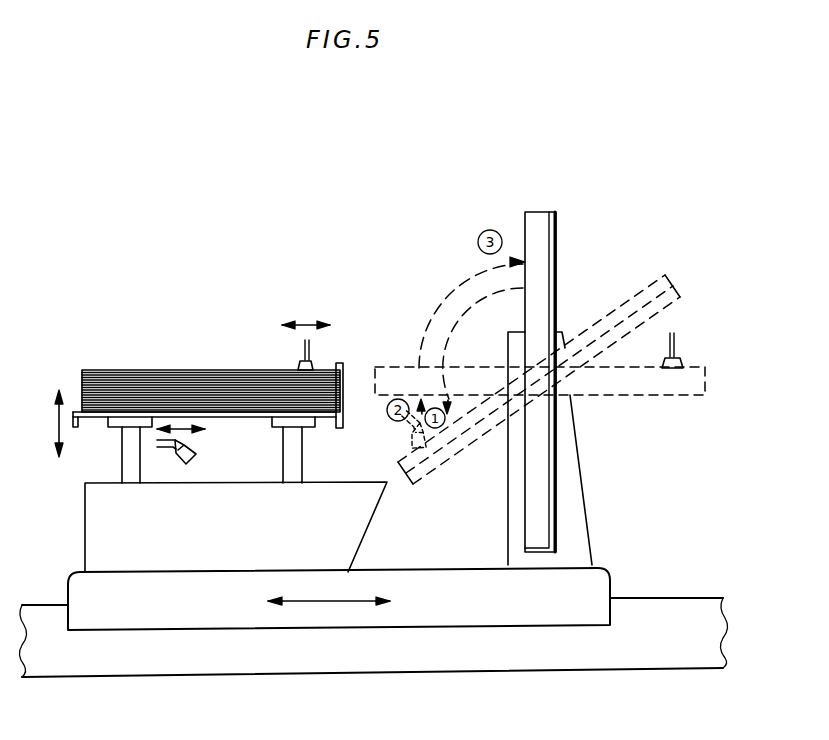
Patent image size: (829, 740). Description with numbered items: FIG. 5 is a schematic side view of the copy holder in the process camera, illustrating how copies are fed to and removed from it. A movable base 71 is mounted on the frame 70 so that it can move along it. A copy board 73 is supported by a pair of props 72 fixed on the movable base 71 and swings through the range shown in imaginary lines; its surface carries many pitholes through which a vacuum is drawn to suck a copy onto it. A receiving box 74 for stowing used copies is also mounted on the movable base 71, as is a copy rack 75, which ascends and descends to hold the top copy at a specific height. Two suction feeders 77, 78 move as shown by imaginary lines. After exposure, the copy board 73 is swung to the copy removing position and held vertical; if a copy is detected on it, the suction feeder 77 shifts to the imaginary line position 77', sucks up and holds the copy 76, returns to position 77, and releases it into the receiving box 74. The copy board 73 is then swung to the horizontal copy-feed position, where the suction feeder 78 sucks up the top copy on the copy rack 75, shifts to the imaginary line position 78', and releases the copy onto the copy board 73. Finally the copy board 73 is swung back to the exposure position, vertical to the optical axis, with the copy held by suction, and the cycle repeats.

The frame 70 is at (247, 652).
The movable base 71 is at (612, 578).
The props 72 is at (578, 500).
The copy board 73 is at (541, 228).
The receiving box 74 is at (85, 514).
The copy rack 75 is at (234, 416).
The copy 76 is at (190, 370).
The suction feeder 77 is at (170, 481).
The imaginary line position of suction feeder 77' is at (391, 441).
The suction feeder 78 is at (326, 345).
The imaginary line position of suction feeder 78' is at (703, 339).